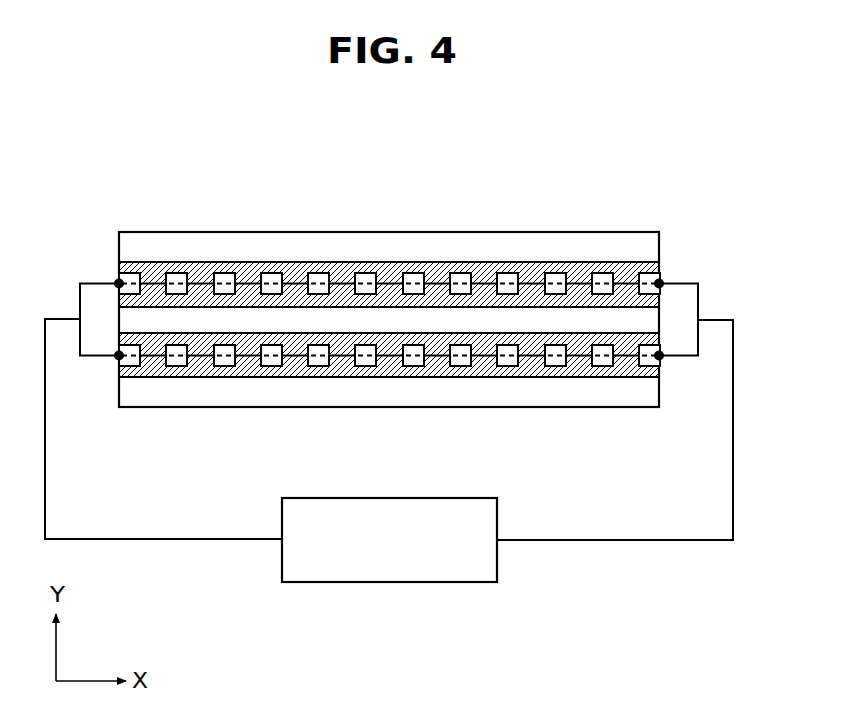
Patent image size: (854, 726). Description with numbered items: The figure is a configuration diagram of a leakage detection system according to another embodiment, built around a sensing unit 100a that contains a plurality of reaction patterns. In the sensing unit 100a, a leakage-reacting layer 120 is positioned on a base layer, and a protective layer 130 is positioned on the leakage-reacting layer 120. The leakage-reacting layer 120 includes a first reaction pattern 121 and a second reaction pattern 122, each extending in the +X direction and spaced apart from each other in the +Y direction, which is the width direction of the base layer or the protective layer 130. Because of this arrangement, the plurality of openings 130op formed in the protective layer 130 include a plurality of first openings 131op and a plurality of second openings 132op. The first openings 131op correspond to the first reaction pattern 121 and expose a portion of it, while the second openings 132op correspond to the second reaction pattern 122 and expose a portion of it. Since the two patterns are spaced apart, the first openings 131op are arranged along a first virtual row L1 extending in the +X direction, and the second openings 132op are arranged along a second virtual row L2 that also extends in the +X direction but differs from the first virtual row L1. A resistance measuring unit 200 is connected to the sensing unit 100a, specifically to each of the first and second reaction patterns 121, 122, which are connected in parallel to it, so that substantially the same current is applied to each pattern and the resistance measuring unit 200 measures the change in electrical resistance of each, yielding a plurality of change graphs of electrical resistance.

The sensing unit 100a is at (703, 143).
The protective layer 130 is at (650, 245).
The openings 130op is at (389, 244).
The first openings 131op is at (460, 273).
The second openings 132op is at (510, 343).
The leakage-reacting layer 120 is at (470, 316).
The first reaction pattern 121 is at (655, 268).
The second reaction pattern 122 is at (658, 338).
The first virtual row L1 is at (345, 283).
The second virtual row L2 is at (345, 356).
The resistance measuring unit 200 is at (405, 497).